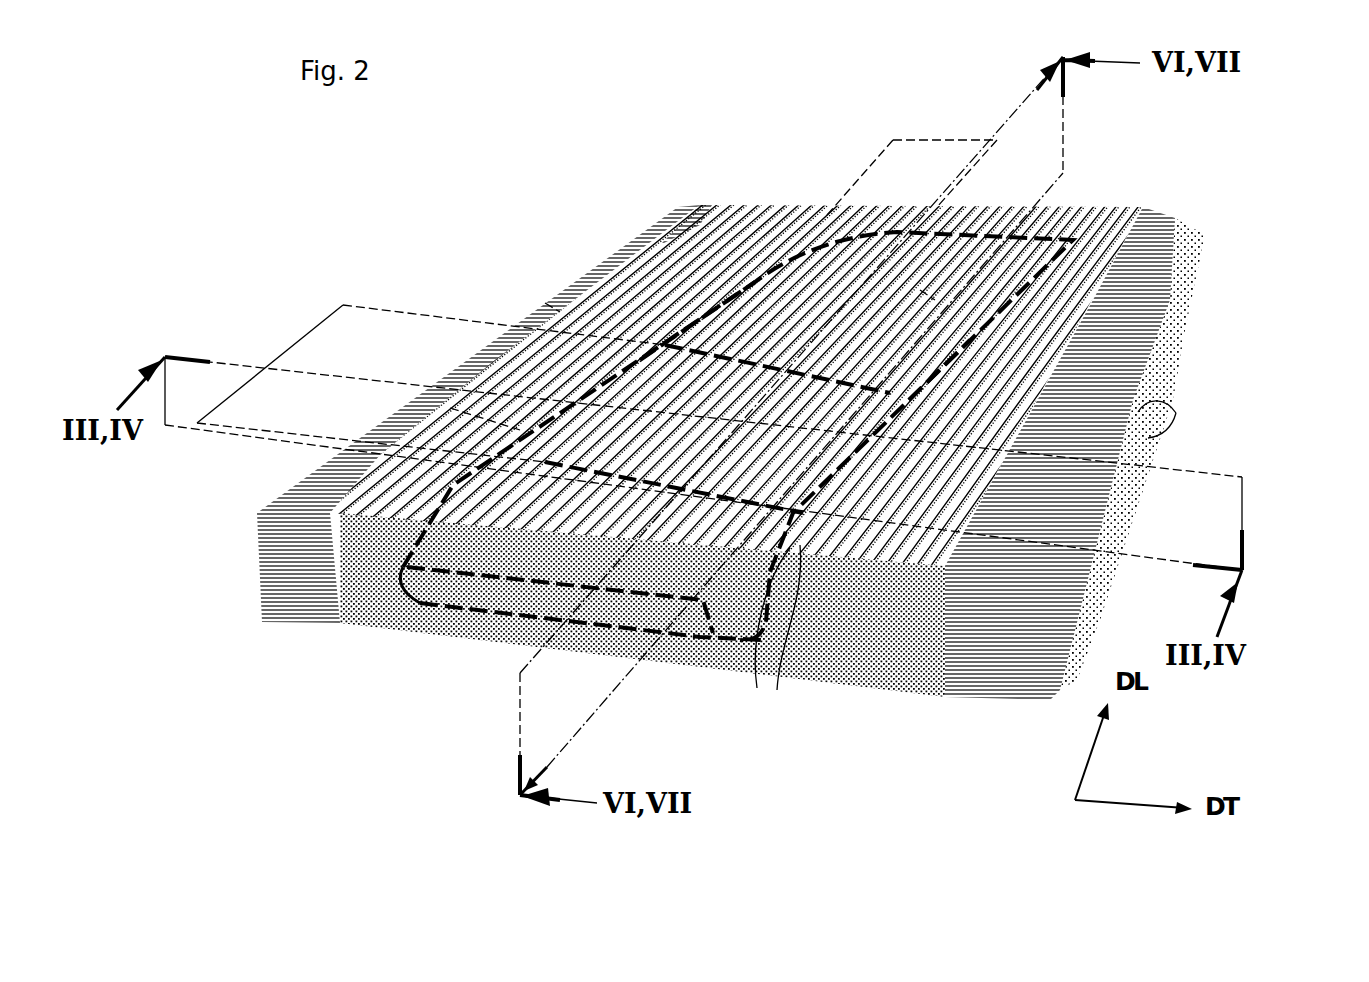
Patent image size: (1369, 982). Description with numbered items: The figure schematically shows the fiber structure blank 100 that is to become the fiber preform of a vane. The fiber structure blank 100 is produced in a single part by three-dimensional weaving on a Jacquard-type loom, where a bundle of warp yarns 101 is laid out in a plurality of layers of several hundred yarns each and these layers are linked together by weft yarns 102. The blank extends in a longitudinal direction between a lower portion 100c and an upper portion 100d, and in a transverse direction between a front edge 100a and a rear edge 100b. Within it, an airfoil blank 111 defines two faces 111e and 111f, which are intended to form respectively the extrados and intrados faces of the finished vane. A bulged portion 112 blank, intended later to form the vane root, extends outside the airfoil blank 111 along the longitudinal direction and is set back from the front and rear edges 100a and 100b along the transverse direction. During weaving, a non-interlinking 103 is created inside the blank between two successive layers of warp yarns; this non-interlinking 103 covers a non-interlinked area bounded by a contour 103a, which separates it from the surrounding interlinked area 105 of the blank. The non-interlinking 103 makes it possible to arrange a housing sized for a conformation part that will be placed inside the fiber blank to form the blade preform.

The fiber structure blank 100 is at (1266, 178).
The front edge 100a is at (602, 270).
The rear edge 100b is at (1030, 312).
The lower portion 100c is at (490, 640).
The upper portion 100d is at (1065, 238).
The warp yarns 101 is at (776, 635).
The weft yarns 102 is at (1182, 419).
The non-interlinking 103 is at (945, 137).
The contour 103a is at (450, 408).
The interlinked area 105 is at (545, 303).
The airfoil blank 111 is at (805, 310).
The face of the airfoil blank 111e is at (752, 335).
The face of the airfoil blank 111f is at (900, 333).
The bulged portion blank 112 is at (400, 582).